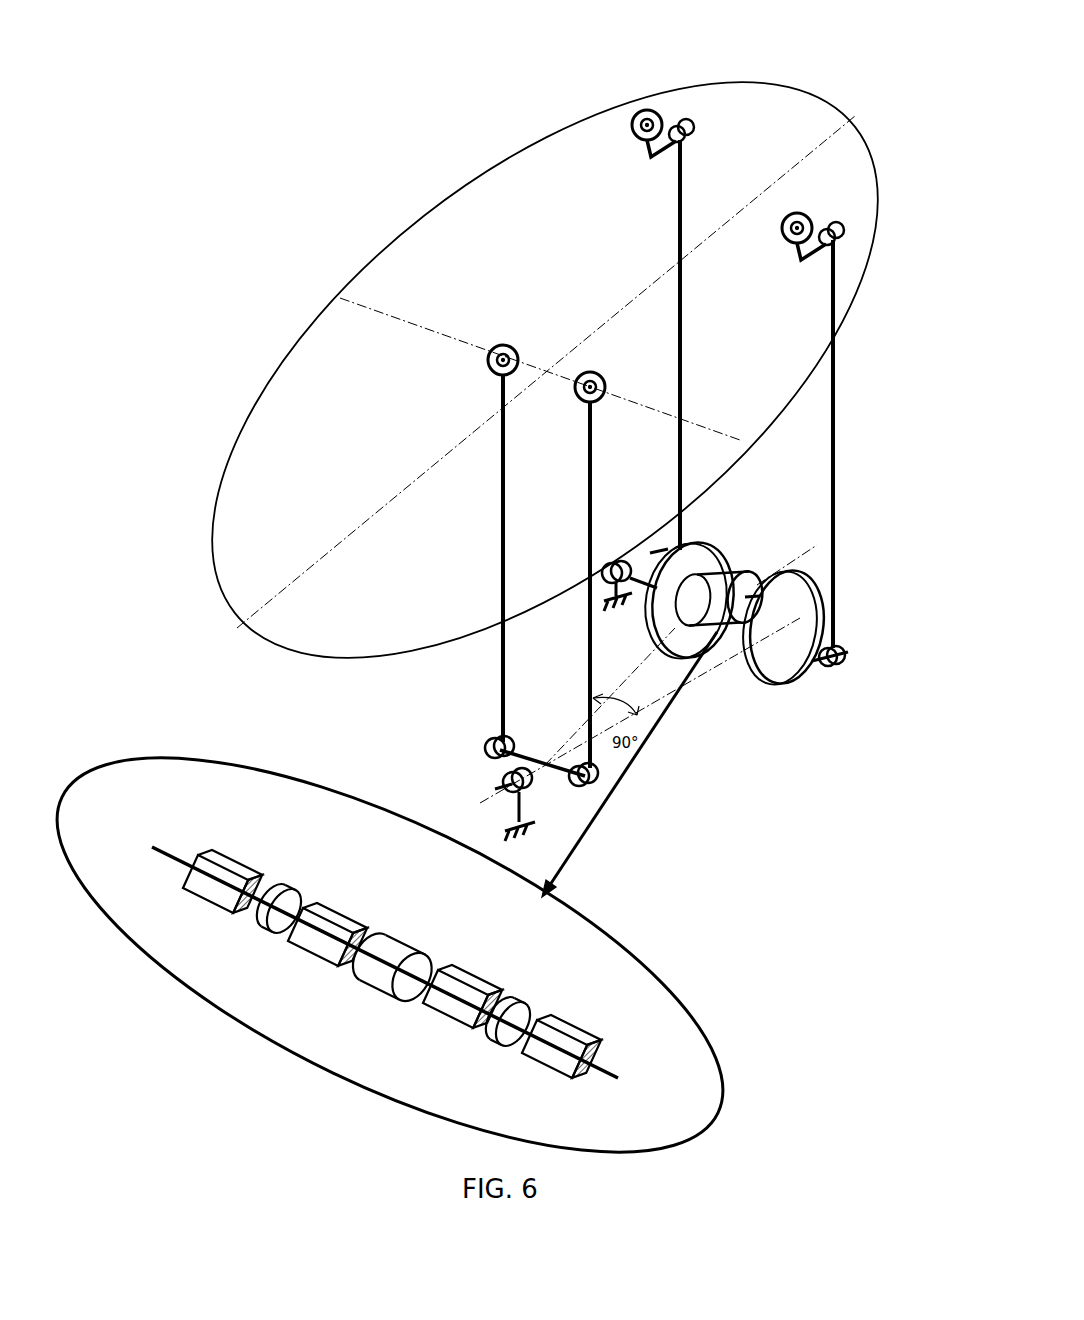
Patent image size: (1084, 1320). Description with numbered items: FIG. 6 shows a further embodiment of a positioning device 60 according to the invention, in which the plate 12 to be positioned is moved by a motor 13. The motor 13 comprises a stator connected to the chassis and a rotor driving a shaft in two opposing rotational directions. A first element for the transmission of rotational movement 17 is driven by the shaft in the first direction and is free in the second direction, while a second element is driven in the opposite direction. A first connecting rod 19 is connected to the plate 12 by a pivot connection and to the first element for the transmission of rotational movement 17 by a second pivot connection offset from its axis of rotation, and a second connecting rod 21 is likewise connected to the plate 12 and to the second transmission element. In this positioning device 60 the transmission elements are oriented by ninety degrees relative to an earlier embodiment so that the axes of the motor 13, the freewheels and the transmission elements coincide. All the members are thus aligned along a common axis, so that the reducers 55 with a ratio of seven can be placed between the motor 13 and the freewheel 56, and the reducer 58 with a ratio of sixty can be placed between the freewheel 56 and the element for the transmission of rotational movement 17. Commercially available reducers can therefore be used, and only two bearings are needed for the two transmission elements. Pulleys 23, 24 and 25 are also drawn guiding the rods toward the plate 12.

The plate 12 is at (860, 145).
The motor 13 is at (400, 937).
The first element for the transmission of rotational movement 17 is at (702, 546).
The first connecting rod 19 is at (682, 293).
The second connecting rod 21 is at (835, 408).
The pulley 23 is at (590, 372).
The pulley 24 is at (656, 110).
The pulley 25 is at (818, 224).
The reducers 55 is at (428, 1000).
The freewheel 56 is at (490, 1034).
The reducer 58 is at (206, 896).
The positioning device 60 is at (203, 246).